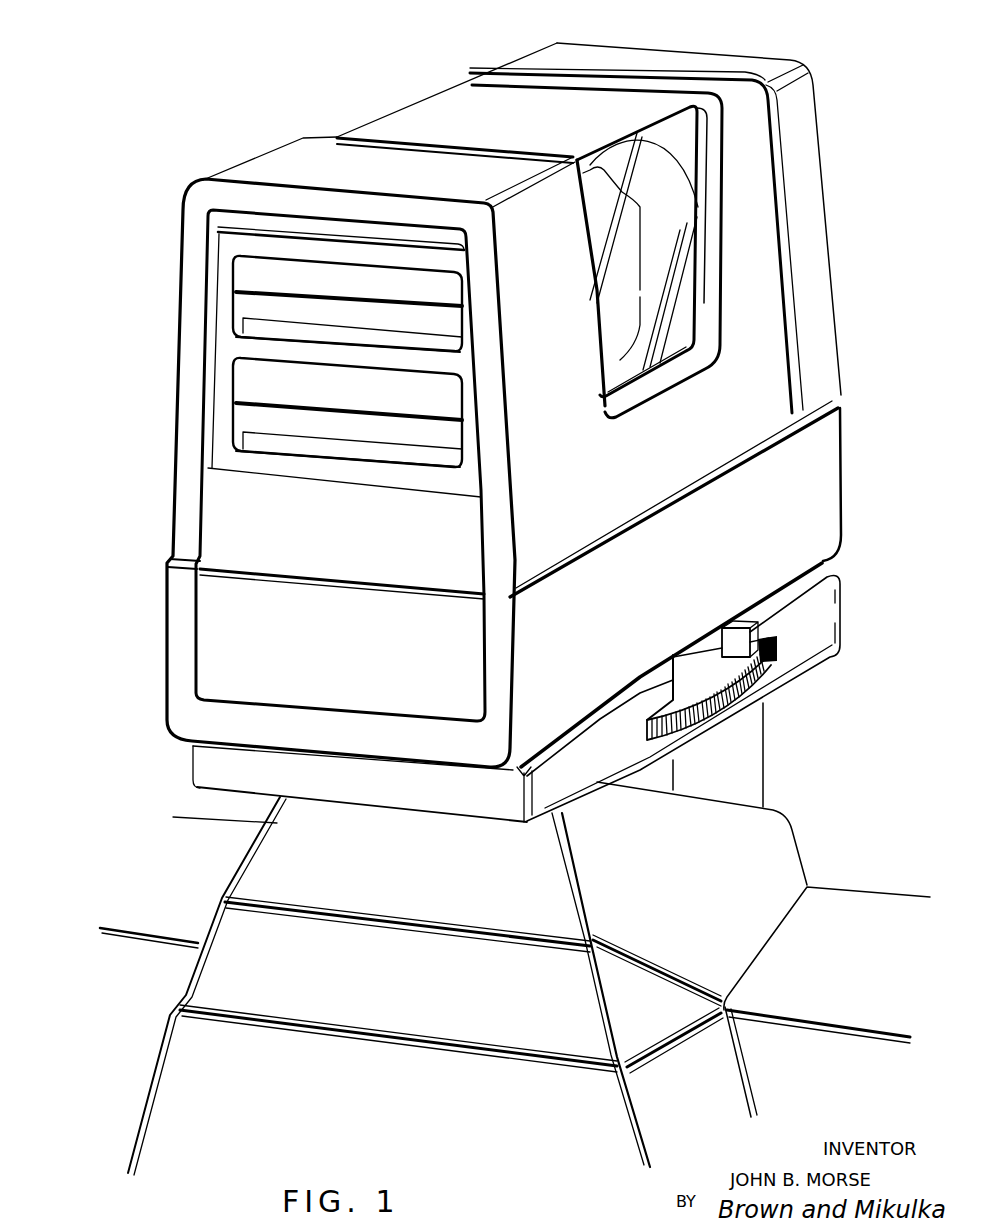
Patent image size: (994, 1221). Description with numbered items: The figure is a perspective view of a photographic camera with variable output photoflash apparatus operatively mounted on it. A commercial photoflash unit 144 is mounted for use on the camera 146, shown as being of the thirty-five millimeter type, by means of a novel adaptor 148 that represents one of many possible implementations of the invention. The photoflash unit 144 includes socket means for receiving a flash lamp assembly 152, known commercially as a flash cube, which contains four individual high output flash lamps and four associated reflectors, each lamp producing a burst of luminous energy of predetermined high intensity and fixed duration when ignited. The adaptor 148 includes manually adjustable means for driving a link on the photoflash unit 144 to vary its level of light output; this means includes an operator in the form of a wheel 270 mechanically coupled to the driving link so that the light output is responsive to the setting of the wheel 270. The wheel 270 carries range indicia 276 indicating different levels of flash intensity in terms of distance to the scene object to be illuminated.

The photoflash unit 144 is at (864, 226).
The camera 146 is at (866, 842).
The adaptor 148 is at (852, 617).
The flash lamp assembly 152 is at (572, 110).
The wheel 270 is at (768, 687).
The range indicia 276 is at (766, 682).